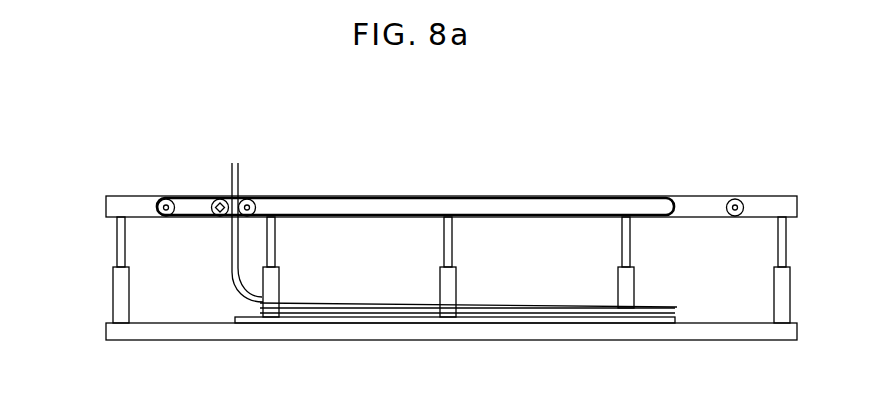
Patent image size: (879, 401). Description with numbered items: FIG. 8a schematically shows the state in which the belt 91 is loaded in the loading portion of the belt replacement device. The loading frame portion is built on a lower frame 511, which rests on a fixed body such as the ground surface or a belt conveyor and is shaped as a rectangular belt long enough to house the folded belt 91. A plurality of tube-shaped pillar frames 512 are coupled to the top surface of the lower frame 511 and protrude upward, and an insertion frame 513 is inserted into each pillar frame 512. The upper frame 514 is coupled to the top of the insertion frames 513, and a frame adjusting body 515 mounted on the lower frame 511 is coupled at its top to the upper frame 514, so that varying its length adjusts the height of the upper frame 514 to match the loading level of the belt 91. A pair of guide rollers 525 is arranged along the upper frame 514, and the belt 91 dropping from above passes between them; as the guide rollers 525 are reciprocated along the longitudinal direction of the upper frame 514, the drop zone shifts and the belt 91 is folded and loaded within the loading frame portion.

The lower frame 511 is at (107, 330).
The pillar frame 512 is at (120, 295).
The insertion frame 513 is at (117, 243).
The upper frame 514 is at (106, 203).
The frame adjusting body 515 is at (445, 283).
The guide roller 525 is at (220, 199).
The belt 91 is at (240, 194).